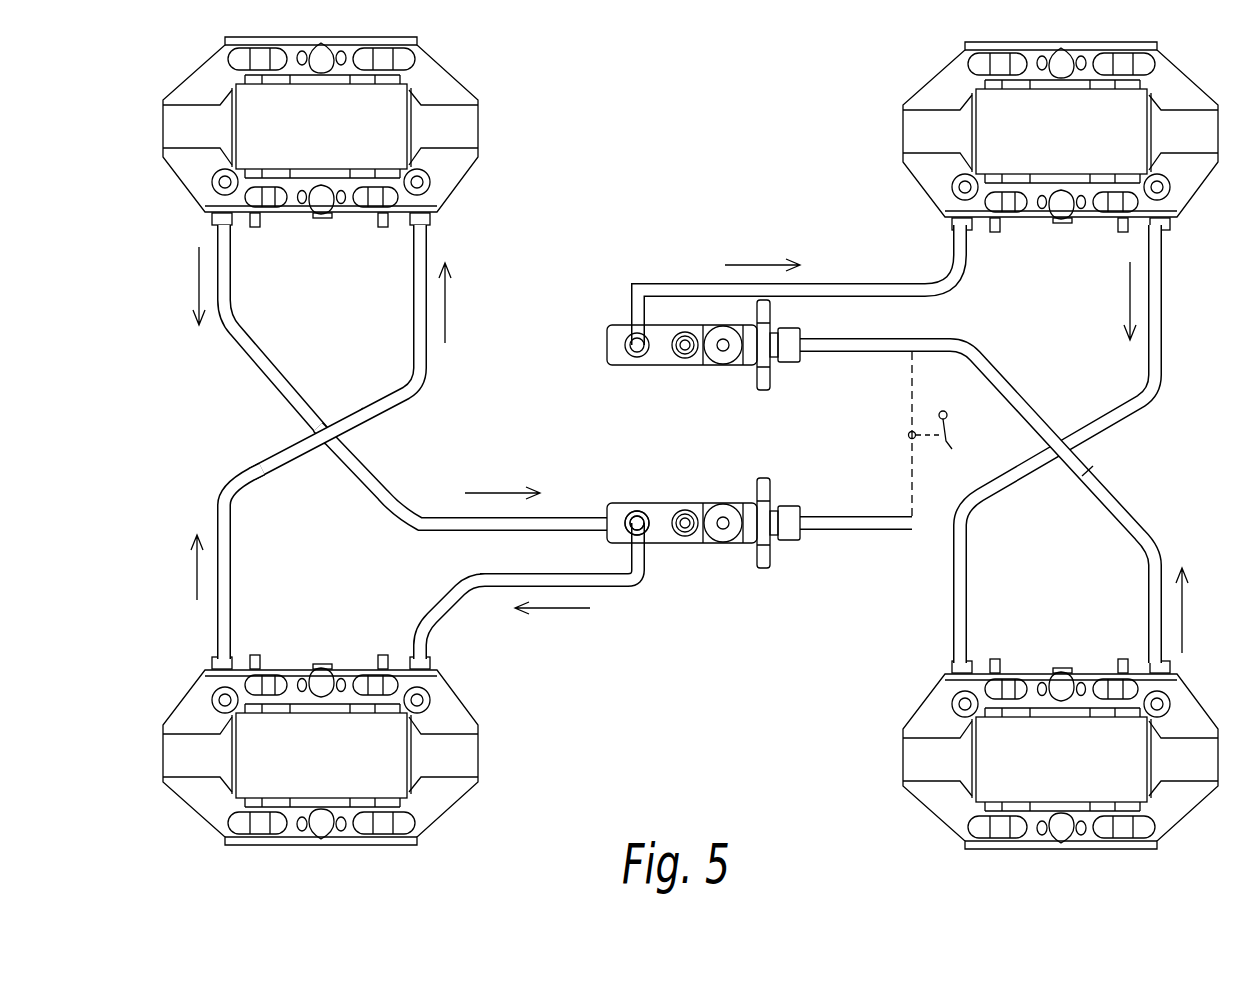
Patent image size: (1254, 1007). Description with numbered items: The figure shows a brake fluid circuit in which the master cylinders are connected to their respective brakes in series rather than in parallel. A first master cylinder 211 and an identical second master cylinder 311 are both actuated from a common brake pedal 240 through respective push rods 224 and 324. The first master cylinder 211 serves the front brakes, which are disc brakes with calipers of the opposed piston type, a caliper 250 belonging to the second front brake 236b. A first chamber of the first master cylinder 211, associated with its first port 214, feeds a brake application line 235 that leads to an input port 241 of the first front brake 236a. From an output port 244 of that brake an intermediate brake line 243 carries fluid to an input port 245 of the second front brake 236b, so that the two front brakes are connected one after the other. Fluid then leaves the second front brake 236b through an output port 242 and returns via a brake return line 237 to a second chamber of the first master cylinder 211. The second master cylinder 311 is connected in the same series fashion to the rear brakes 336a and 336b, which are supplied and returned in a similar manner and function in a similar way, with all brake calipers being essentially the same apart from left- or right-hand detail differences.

The caliper 250 is at (370, 120).
The first front brake 236a is at (458, 760).
The second front brake 236b is at (458, 125).
The rear brake 336a is at (922, 128).
The rear brake 336b is at (922, 763).
The first master cylinder 211 is at (697, 544).
The second master cylinder 311 is at (697, 366).
The first port 214 is at (641, 509).
The push rod 224 is at (852, 531).
The push rod 324 is at (853, 346).
The brake application line 235 is at (608, 588).
The brake return line 237 is at (572, 516).
The brake pedal 240 is at (946, 428).
The input port 241 is at (427, 667).
The output port 242 is at (216, 224).
The intermediate brake line 243 is at (413, 390).
The output port 244 is at (217, 667).
The input port 245 is at (430, 224).